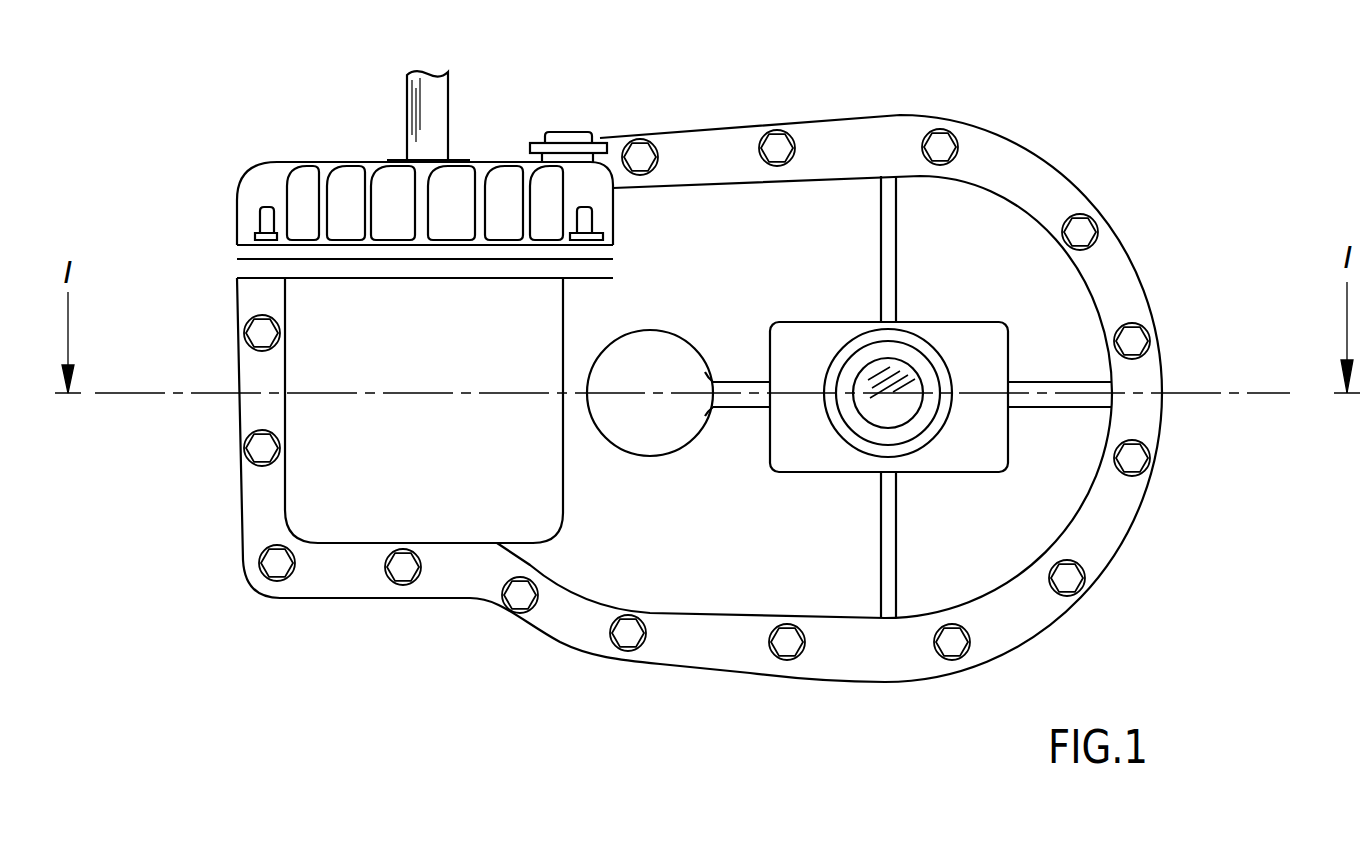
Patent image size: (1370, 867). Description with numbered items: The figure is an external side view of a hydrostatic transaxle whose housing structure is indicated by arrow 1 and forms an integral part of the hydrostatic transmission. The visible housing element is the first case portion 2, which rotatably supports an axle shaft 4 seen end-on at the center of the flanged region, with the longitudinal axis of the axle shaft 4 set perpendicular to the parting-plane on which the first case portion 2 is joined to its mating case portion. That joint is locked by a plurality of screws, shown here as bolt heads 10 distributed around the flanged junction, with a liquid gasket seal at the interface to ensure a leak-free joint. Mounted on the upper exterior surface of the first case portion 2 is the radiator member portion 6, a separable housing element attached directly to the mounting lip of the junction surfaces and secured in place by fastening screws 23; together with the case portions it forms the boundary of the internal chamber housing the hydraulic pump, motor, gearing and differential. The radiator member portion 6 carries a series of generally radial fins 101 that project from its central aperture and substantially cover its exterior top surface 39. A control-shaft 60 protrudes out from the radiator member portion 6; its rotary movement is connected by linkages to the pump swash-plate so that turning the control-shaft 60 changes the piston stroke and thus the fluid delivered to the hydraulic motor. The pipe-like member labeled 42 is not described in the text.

The hydrostatic transaxle assembly 1 is at (1120, 100).
The first case portion 2 is at (243, 270).
The axle shaft 4 is at (877, 421).
The radiator member portion 6 is at (243, 252).
The bolt heads 10 is at (257, 338).
The fastening screws 23 is at (262, 212).
The exterior top surface 39 is at (460, 238).
The pipe 42 is at (430, 110).
The control-shaft 60 is at (570, 132).
The radial fins 101 is at (273, 173).